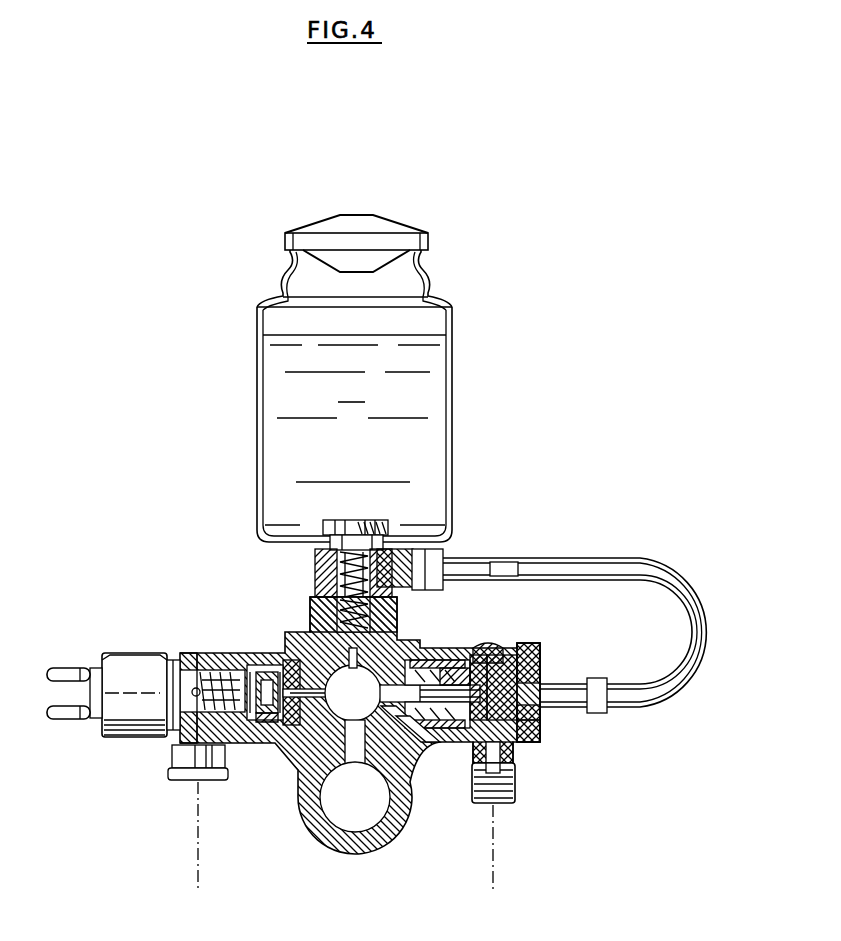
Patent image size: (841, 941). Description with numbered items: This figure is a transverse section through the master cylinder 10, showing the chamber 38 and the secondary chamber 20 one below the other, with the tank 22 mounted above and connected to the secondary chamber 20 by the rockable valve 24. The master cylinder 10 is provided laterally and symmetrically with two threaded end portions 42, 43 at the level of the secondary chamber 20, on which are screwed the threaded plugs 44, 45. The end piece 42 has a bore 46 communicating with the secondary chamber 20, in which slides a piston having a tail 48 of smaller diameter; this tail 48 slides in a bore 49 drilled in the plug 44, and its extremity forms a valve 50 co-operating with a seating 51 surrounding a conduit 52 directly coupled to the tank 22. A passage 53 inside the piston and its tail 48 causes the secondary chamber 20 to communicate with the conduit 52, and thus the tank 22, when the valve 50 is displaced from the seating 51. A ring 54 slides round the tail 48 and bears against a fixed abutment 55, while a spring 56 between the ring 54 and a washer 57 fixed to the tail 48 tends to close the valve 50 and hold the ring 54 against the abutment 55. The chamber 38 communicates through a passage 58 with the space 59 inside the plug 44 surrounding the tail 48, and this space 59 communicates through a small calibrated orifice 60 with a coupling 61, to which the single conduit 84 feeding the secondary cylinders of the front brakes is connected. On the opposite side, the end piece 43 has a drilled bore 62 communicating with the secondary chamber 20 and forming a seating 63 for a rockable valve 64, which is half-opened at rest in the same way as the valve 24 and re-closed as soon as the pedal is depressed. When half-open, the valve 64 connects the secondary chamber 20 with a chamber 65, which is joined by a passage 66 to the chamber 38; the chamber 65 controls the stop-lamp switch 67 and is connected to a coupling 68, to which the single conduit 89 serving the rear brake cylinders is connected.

The master cylinder 10 is at (294, 772).
The secondary chamber 20 is at (365, 693).
The tank 22 is at (354, 378).
The valve 24 is at (318, 618).
The chamber 38 is at (366, 809).
The threaded end portion 42 is at (476, 740).
The threaded end portion 43 is at (247, 662).
The threaded plug 44 is at (540, 652).
The threaded plug 45 is at (228, 662).
The bore 46 is at (395, 680).
The tail 48 is at (524, 662).
The bore 49 is at (497, 652).
The valve 50 is at (540, 680).
The seating 51 is at (540, 712).
The conduit 52 is at (597, 678).
The passage 53 is at (408, 724).
The ring 54 is at (442, 660).
The fixed abutment 55 is at (418, 660).
The spring 56 is at (445, 730).
The washer 57 is at (466, 660).
The passage 58 is at (412, 752).
The space 59 is at (479, 657).
The calibrated orifice 60 is at (540, 732).
The coupling 61 is at (515, 785).
The drilled bore 62 is at (321, 703).
The seating 63 is at (291, 660).
The rockable valve 64 is at (268, 725).
The chamber 65 is at (264, 666).
The passage 66 is at (349, 753).
The stop-lamp switch 67 is at (120, 655).
The coupling 68 is at (172, 760).
The conduit 84 is at (495, 836).
The conduit 89 is at (196, 830).